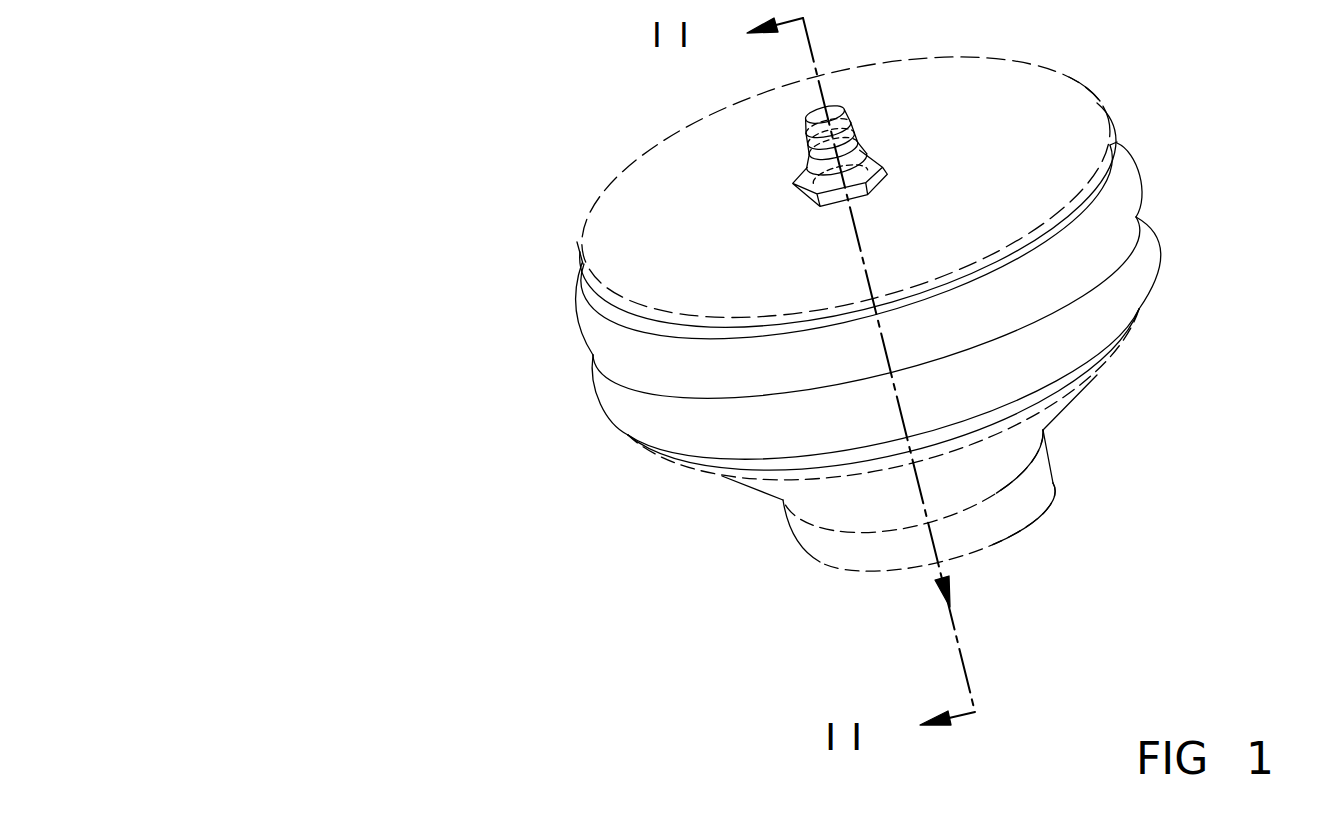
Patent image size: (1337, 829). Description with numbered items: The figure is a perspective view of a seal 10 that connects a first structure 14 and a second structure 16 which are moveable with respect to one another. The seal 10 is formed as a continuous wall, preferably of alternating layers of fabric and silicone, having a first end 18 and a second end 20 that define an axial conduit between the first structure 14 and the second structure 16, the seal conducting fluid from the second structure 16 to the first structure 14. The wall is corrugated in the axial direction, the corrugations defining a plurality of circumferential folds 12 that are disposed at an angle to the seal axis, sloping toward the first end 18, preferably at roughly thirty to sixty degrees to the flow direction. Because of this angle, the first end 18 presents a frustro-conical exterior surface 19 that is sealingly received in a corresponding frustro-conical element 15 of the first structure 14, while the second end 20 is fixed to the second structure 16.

The seal 10 is at (853, 329).
The circumferential folds 12 is at (556, 391).
The first structure 14 is at (781, 595).
The frustro-conical element 15 is at (714, 503).
The second structure 16 is at (621, 192).
The first end 18 is at (607, 479).
The frustro-conical exterior surface 19 is at (1181, 285).
The second end 20 is at (1134, 89).